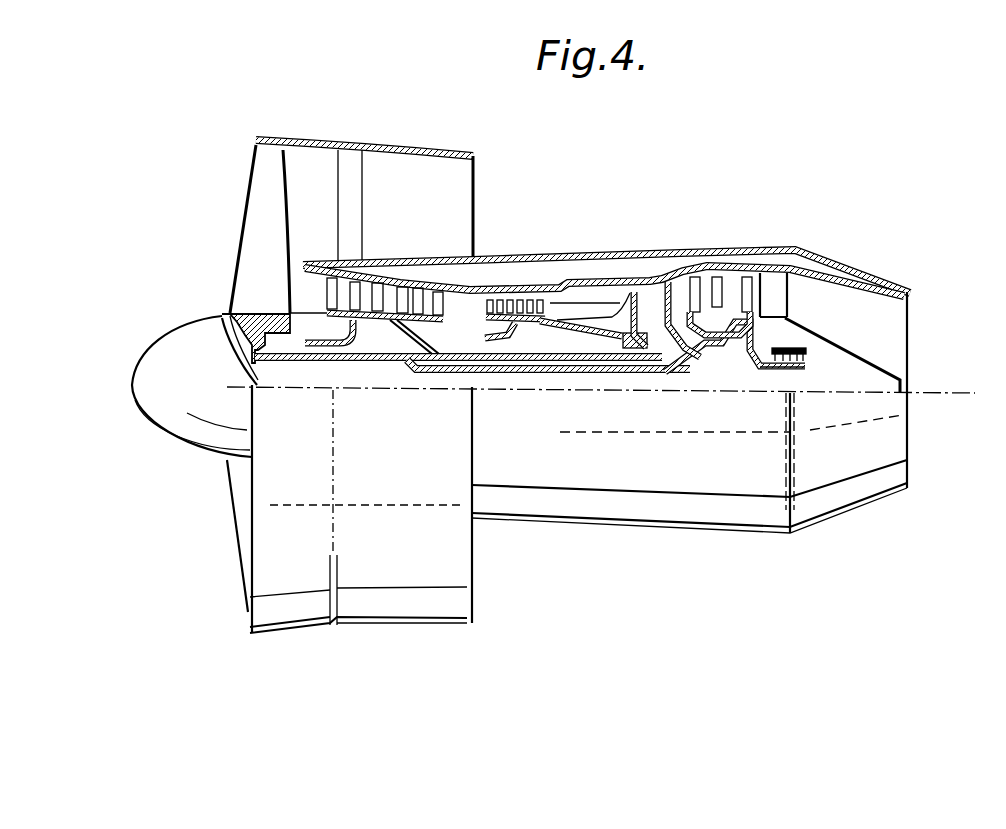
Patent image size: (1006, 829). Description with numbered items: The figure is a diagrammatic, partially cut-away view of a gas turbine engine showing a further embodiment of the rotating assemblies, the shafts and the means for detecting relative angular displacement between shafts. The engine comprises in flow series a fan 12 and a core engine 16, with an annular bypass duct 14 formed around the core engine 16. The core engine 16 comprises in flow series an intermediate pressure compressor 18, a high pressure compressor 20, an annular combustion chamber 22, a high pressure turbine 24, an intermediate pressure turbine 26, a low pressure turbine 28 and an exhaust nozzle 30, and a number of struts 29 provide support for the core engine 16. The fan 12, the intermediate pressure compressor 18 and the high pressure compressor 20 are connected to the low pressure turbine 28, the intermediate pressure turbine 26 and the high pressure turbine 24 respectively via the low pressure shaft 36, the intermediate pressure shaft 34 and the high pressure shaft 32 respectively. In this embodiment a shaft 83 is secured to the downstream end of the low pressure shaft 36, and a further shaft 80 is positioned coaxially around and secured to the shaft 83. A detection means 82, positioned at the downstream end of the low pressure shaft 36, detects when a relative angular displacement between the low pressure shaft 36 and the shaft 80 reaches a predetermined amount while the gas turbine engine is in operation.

The fan 12 is at (257, 208).
The annular bypass duct 14 is at (447, 177).
The core engine 16 is at (689, 238).
The intermediate pressure compressor 18 is at (420, 282).
The high pressure compressor 20 is at (530, 293).
The annular combustion chamber 22 is at (615, 295).
The high pressure turbine 24 is at (632, 295).
The intermediate pressure turbine 26 is at (657, 288).
The low pressure turbine 28 is at (747, 290).
The struts 29 is at (778, 303).
The exhaust nozzle 30 is at (883, 343).
The high pressure shaft 32 is at (597, 377).
The intermediate pressure shaft 34 is at (673, 377).
The low pressure shaft 36 is at (540, 377).
The shaft 80 is at (807, 347).
The detection means 82 is at (815, 368).
The shaft 83 is at (783, 367).